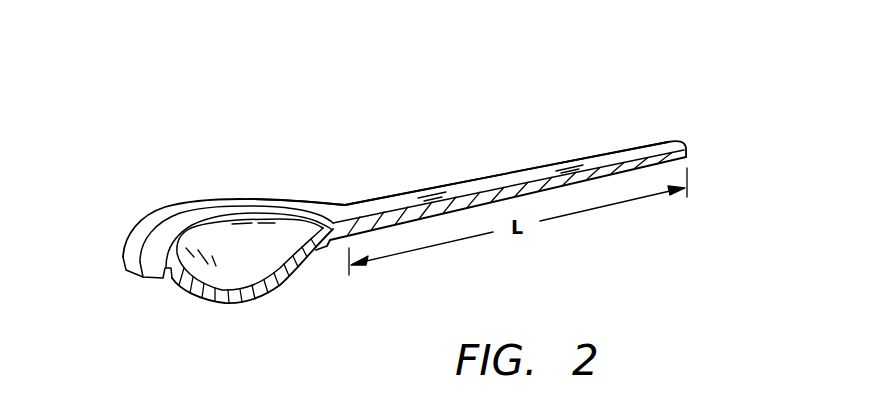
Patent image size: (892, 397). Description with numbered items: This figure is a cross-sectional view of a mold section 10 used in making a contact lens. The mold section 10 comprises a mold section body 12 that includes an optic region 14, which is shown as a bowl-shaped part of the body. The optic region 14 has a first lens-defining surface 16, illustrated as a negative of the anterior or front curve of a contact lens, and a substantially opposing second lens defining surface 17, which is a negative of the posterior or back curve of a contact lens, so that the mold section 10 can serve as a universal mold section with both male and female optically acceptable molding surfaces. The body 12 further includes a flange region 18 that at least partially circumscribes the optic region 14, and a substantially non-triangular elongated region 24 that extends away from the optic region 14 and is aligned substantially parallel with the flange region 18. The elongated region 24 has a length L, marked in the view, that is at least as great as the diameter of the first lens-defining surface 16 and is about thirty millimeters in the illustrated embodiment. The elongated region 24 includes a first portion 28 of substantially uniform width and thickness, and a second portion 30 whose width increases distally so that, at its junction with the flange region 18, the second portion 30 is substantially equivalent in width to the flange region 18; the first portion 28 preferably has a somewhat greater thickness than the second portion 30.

The mold section 10 is at (690, 108).
The mold section body 12 is at (508, 176).
The optic region 14 is at (207, 253).
The first lens-defining surface 16 is at (243, 232).
The second lens defining surface 17 is at (239, 306).
The flange region 18 is at (153, 229).
The elongated region 24 is at (592, 162).
The first portion 28 is at (447, 187).
The second portion 30 is at (345, 206).